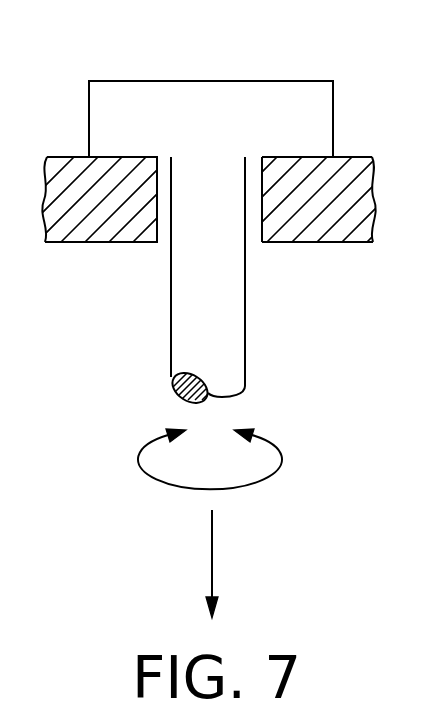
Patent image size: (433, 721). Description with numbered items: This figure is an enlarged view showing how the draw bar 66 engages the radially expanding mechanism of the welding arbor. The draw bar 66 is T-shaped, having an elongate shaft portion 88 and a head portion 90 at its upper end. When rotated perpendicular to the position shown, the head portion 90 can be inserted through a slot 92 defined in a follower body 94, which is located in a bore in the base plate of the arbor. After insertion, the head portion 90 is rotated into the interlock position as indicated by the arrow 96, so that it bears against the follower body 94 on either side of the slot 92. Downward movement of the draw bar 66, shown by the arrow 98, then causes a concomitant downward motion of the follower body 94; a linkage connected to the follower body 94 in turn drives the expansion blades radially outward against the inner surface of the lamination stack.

The draw bar 66 is at (270, 307).
The elongate shaft portion 88 is at (188, 290).
The head portion 90 is at (263, 81).
The slot 92 is at (253, 237).
The follower body 94 is at (65, 155).
The arrow 96 is at (275, 472).
The arrow 98 is at (212, 567).